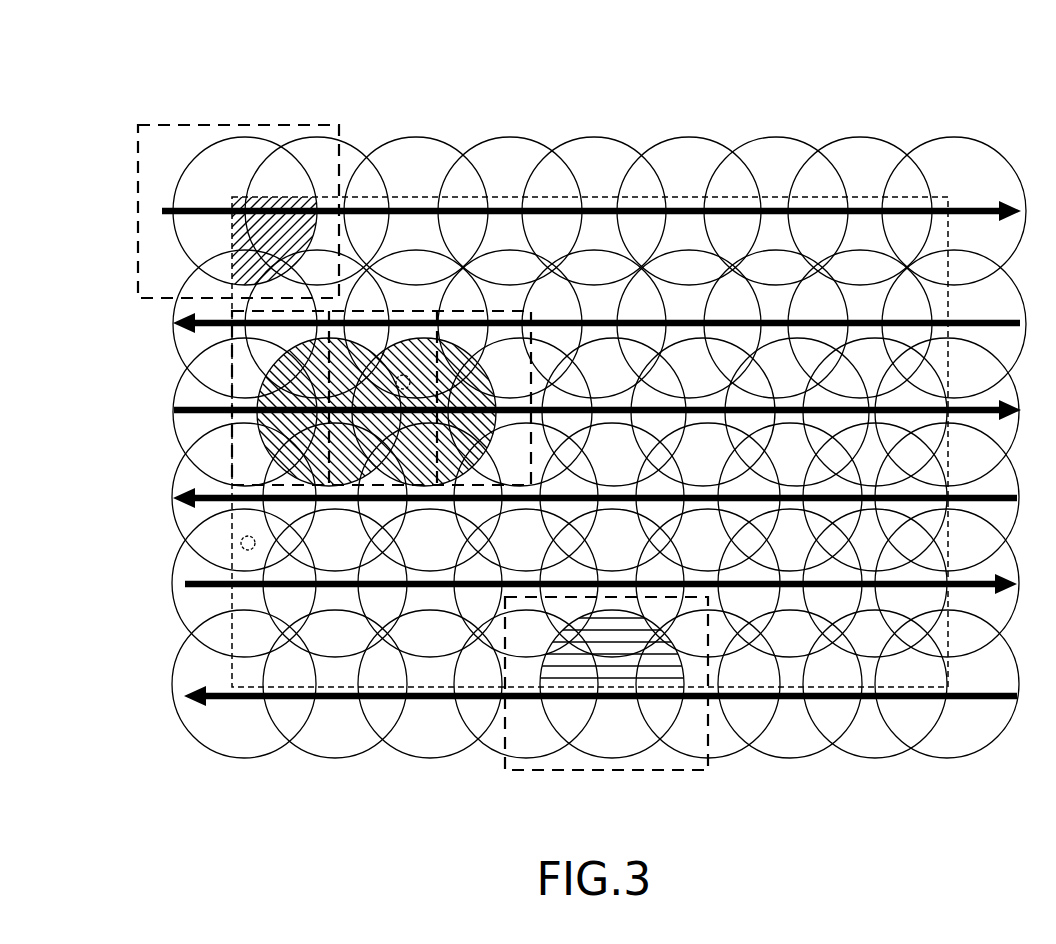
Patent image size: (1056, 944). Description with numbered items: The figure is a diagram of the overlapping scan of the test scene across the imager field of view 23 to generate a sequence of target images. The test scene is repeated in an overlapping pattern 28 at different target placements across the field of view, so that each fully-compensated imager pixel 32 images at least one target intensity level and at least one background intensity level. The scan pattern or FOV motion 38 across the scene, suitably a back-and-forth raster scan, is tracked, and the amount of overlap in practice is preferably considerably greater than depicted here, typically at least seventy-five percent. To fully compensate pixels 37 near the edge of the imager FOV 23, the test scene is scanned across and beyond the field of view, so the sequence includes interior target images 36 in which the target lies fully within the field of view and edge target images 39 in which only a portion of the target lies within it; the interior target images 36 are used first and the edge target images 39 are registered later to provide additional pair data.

The field of view 23 is at (222, 662).
The overlapping pattern 28 is at (245, 106).
The fully-compensated imager pixel 32 is at (380, 380).
The interior target image 36 is at (530, 422).
The pixel near the edge of the imager FOV 37 is at (226, 548).
The FOV motion 38 is at (855, 204).
The edge target image 39 is at (138, 210).